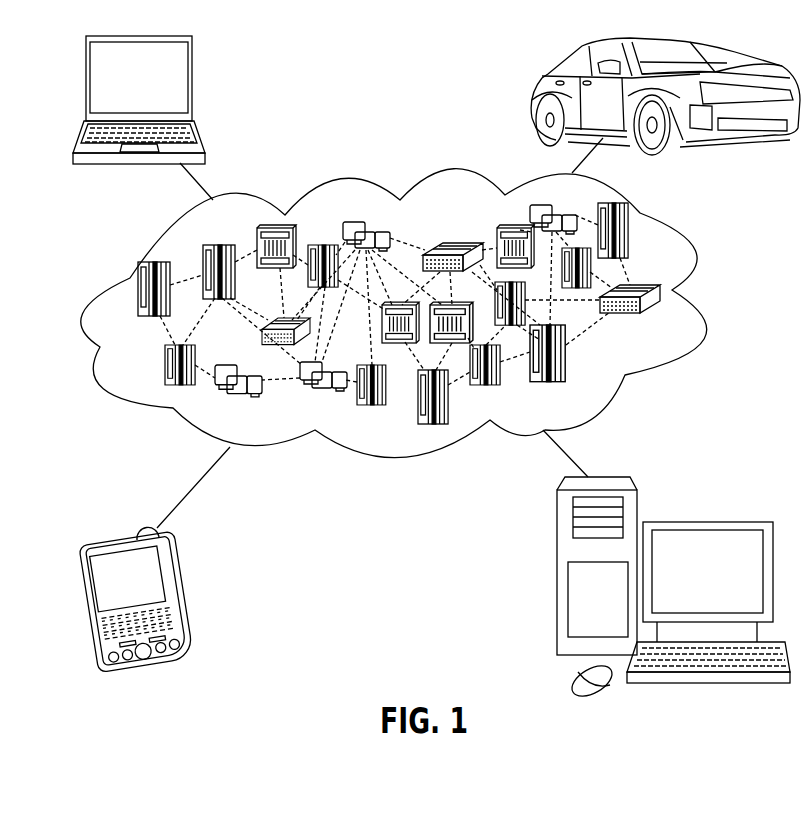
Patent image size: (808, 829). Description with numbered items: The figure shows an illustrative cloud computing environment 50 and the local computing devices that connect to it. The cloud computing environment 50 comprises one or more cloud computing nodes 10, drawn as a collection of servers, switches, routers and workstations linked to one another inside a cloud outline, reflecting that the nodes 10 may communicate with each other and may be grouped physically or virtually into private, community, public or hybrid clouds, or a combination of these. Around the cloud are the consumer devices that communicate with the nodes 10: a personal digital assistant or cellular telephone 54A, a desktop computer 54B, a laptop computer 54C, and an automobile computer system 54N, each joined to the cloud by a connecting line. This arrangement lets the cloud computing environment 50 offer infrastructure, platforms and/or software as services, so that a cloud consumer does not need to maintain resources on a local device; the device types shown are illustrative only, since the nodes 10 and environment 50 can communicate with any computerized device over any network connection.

The cloud computing nodes 10 is at (670, 328).
The cloud computing environment 50 is at (712, 296).
The personal digital assistant or cellular telephone 54A is at (185, 596).
The desktop computer 54B is at (705, 522).
The laptop computer 54C is at (193, 80).
The automobile computer system 54N is at (528, 96).